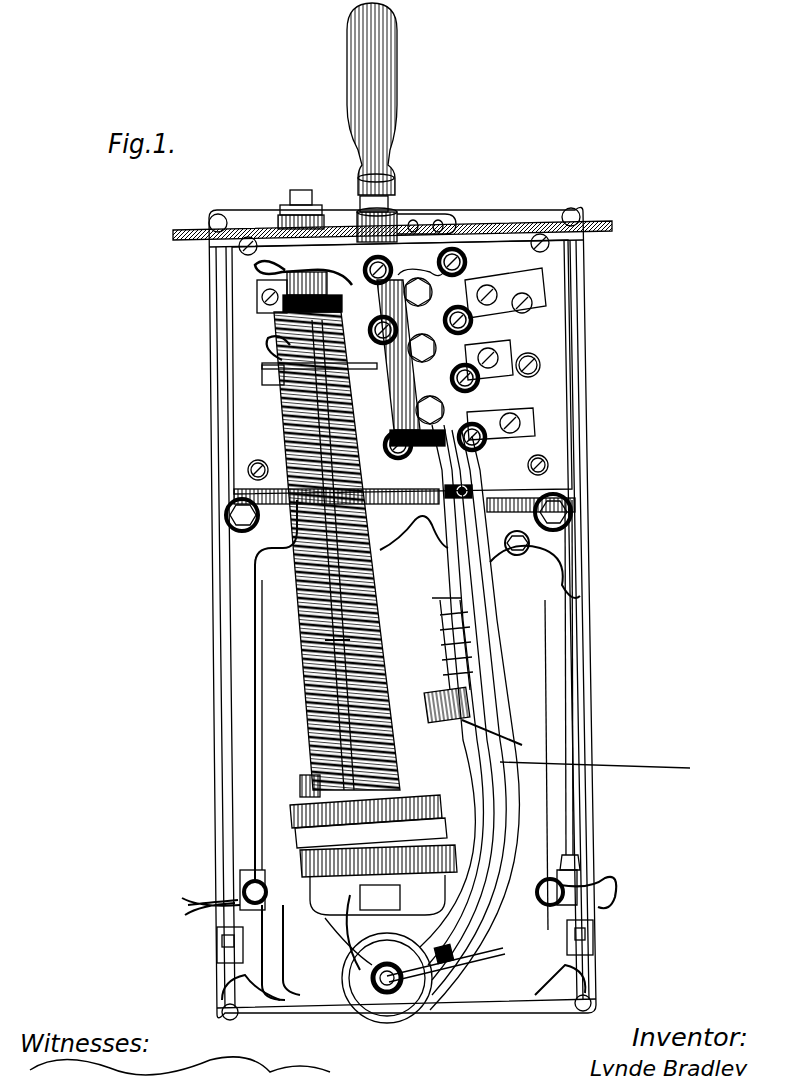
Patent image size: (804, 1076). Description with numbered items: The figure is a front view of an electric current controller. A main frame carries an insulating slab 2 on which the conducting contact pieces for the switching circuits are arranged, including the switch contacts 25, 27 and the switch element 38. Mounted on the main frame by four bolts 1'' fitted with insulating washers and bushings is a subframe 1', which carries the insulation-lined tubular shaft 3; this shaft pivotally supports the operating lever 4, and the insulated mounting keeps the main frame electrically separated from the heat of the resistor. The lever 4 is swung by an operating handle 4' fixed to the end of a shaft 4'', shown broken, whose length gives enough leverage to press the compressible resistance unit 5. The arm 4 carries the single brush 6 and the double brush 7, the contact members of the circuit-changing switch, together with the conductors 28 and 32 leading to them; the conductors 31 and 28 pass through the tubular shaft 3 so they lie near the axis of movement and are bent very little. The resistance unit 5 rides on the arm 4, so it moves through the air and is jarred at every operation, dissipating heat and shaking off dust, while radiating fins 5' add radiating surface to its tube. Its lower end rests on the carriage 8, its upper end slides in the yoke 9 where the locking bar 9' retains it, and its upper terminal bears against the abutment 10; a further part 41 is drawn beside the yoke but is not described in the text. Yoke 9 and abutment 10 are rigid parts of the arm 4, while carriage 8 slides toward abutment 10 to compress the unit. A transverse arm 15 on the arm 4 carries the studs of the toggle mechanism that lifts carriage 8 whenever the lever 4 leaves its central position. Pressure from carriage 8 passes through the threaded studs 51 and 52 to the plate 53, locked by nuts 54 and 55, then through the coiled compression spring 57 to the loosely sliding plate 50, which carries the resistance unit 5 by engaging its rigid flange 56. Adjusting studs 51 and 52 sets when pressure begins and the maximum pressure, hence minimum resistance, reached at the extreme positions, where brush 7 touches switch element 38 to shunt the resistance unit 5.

The subframe 1' is at (397, 613).
The bolts 1'' is at (407, 729).
The insulating slab 2 is at (552, 392).
The tubular shaft 3 is at (387, 995).
The operating lever 4 is at (527, 717).
The operating handle 4' is at (404, 100).
The shaft 4'' is at (437, 181).
The resistance unit 5 is at (266, 551).
The radiating fins 5' is at (308, 673).
The single brush 6 is at (470, 397).
The double brush 7 is at (490, 300).
The carriage 8 is at (228, 930).
The yoke 9 is at (261, 411).
The locking bar 9' is at (213, 382).
The abutment 10 is at (295, 190).
The transverse arm 15 is at (422, 740).
The switch contact 25 is at (257, 296).
The switch contact 27 is at (520, 415).
The conductor 28 is at (470, 662).
The conductor 31 is at (335, 970).
The conductor 32 is at (255, 268).
The switch element 38 is at (542, 362).
The wire loop 41 is at (265, 352).
The plate 50 is at (300, 835).
The threaded stud 51 is at (305, 860).
The threaded stud 52 is at (609, 685).
The plate 53 is at (238, 895).
The nut 54 is at (215, 905).
The nut 55 is at (582, 874).
The flange 56 is at (300, 792).
The coiled compression spring 57 is at (312, 778).